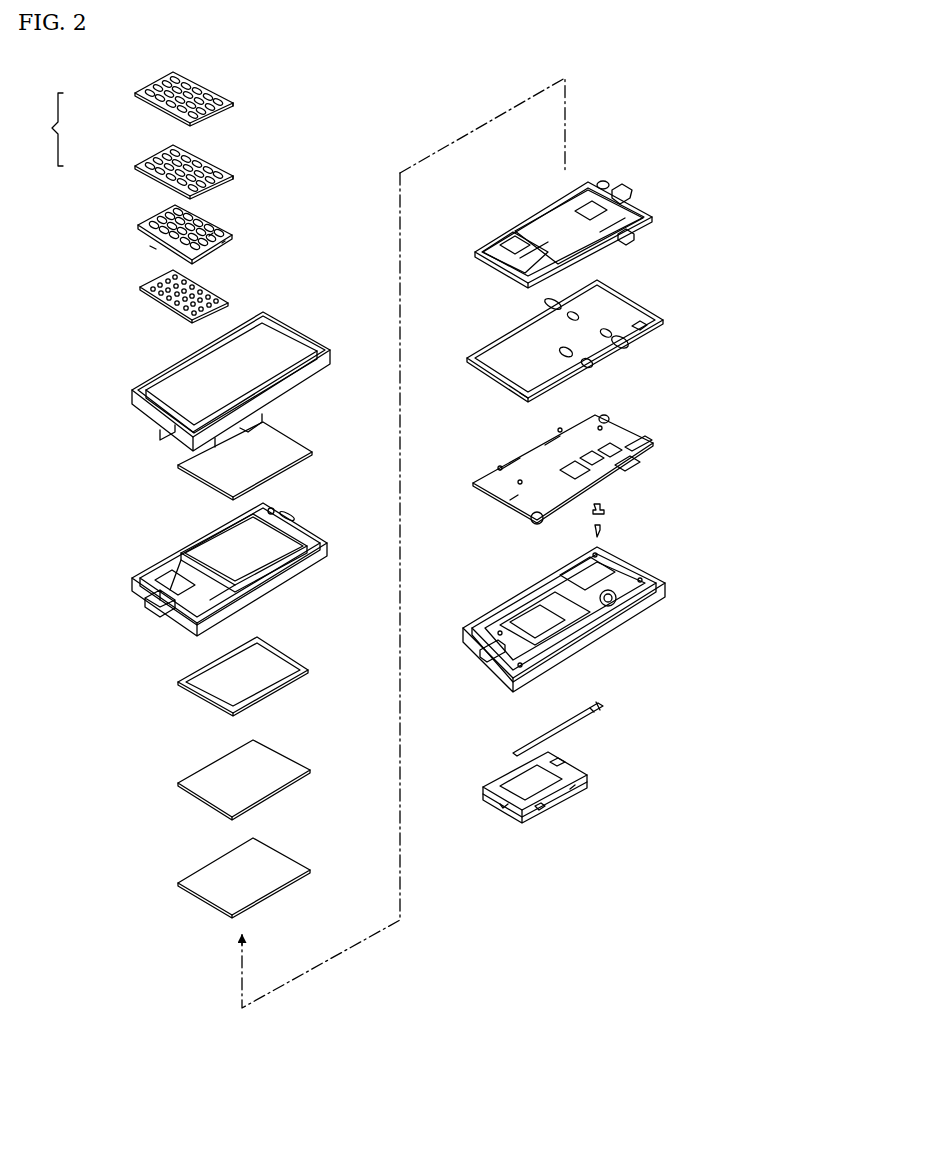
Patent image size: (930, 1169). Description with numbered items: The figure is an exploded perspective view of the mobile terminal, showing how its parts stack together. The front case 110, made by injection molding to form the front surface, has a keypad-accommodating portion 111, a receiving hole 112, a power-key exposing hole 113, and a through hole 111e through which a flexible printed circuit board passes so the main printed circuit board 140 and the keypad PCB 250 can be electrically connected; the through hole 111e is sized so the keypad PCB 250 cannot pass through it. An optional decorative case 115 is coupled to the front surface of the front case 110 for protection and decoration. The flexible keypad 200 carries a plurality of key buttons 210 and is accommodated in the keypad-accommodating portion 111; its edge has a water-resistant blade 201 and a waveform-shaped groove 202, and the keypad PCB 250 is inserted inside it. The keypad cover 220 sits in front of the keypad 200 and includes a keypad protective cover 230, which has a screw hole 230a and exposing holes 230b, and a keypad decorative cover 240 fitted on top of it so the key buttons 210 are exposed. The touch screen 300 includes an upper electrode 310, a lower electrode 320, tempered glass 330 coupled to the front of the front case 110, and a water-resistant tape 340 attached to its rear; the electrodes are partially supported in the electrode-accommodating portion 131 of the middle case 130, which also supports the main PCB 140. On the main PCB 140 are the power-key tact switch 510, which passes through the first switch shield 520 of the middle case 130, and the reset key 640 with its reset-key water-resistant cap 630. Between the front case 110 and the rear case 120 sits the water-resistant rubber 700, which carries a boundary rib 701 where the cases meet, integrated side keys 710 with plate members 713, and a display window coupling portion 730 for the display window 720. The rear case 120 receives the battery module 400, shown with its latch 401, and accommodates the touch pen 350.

The front case 110 is at (133, 588).
The keypad-accommodating portion 111 is at (165, 612).
The through hole 111e is at (165, 560).
The receiving hole 112 is at (295, 517).
The power-key exposing hole 113 is at (272, 510).
The decorative case 115 is at (132, 393).
The rear case 120 is at (665, 587).
The middle case 130 is at (660, 218).
The electrode-accommodating portion 131 is at (625, 228).
The main printed circuit board 140 is at (655, 440).
The flexible keypad 200 is at (130, 229).
The water-resistant blade 201 is at (150, 246).
The groove 202 is at (225, 241).
The key buttons 210 is at (213, 233).
The keypad cover 220 is at (42, 129).
The keypad protective cover 230 is at (140, 172).
The screw hole 230a is at (232, 100).
The exposing holes 230b is at (232, 168).
The keypad decorative cover 240 is at (140, 100).
The keypad PCB 250 is at (145, 293).
The touch screen 300 is at (165, 793).
The upper electrode 310 is at (298, 770).
The lower electrode 320 is at (298, 870).
The tempered glass 330 is at (292, 452).
The water-resistant tape 340 is at (296, 662).
The touch pen 350 is at (605, 705).
The battery module 400 is at (560, 820).
The battery latch 401 is at (540, 808).
The power-key tact switch 510 is at (610, 417).
The first switch shield 520 is at (608, 180).
The reset-key water-resistant cap 630 is at (605, 510).
The reset key 640 is at (605, 532).
The water-resistant rubber 700 is at (660, 305).
The boundary rib 701 is at (520, 393).
The side keys 710 is at (535, 302).
The plate member 713 is at (640, 327).
The display window 720 is at (555, 354).
The display window coupling portion 730 is at (590, 365).